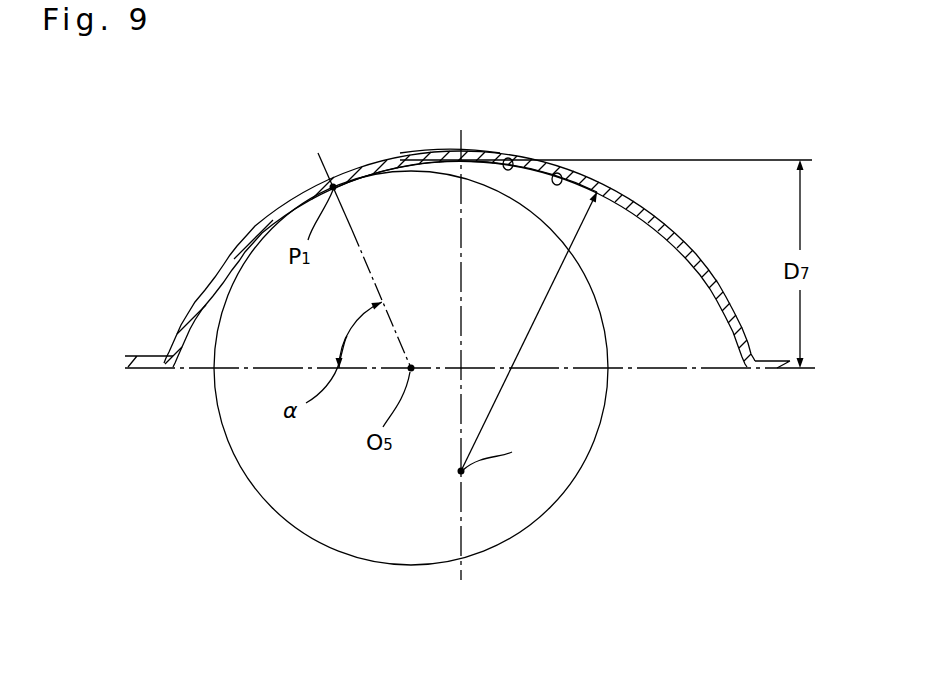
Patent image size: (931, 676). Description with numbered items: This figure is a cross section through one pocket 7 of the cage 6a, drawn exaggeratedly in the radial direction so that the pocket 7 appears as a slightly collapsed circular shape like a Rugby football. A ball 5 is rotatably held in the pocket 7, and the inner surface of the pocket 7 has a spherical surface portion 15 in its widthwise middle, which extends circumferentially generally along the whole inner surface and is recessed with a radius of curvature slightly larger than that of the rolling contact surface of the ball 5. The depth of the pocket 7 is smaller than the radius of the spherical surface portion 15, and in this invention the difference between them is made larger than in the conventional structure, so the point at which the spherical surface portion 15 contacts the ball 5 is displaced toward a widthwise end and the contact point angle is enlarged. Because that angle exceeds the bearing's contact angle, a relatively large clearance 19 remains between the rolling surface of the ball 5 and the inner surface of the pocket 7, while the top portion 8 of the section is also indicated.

The ball 5 is at (525, 505).
The cage 6a is at (624, 184).
The pocket 7 is at (567, 168).
The top portion of claw 8 is at (447, 151).
The spherical surface portion 15 is at (511, 158).
The clearance 19 is at (202, 340).